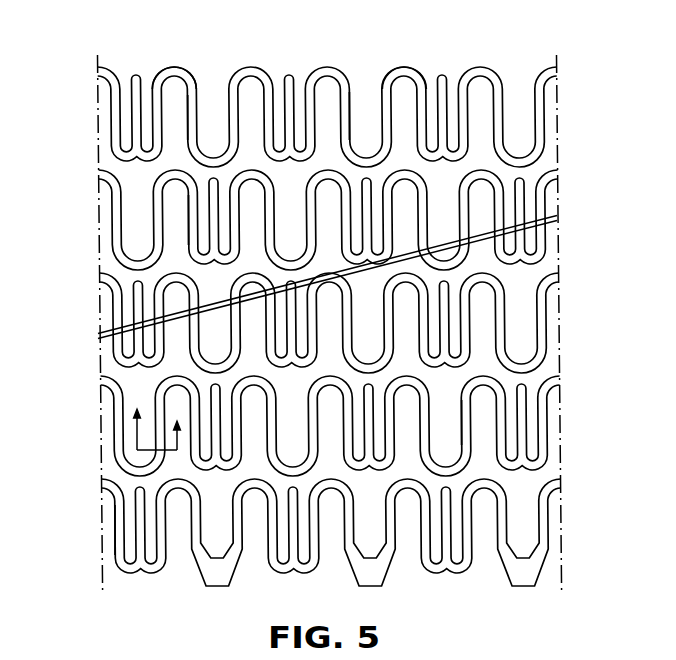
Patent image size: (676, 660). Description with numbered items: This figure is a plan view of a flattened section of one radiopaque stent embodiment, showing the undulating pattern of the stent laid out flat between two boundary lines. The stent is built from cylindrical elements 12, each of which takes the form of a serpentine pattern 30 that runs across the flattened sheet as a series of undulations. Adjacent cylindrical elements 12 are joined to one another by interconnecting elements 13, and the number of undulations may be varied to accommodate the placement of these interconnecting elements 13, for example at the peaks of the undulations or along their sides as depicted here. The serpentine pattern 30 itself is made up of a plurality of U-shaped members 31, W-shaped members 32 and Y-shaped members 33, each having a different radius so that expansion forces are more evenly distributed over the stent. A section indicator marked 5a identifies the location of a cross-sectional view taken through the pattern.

The cylindrical element 12 is at (102, 495).
The interconnecting element 13 is at (520, 198).
The serpentine pattern 30 is at (205, 70).
The U-shaped member 31 is at (173, 66).
The W-shaped member 32 is at (190, 225).
The Y-shaped member 33 is at (351, 95).
The section line 5a- 5a is at (156, 413).